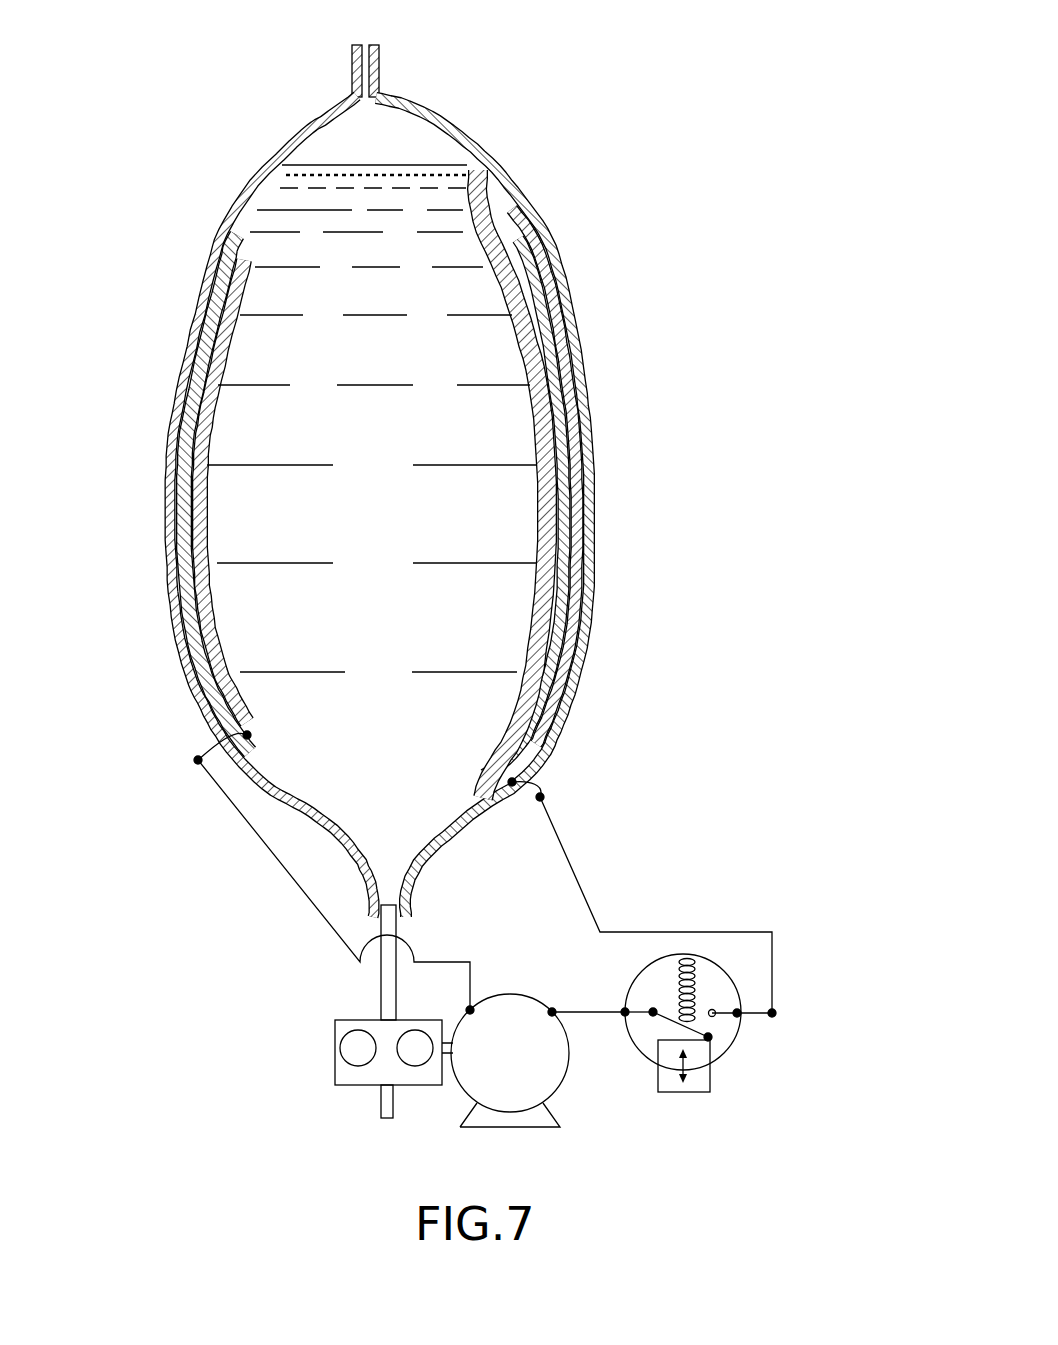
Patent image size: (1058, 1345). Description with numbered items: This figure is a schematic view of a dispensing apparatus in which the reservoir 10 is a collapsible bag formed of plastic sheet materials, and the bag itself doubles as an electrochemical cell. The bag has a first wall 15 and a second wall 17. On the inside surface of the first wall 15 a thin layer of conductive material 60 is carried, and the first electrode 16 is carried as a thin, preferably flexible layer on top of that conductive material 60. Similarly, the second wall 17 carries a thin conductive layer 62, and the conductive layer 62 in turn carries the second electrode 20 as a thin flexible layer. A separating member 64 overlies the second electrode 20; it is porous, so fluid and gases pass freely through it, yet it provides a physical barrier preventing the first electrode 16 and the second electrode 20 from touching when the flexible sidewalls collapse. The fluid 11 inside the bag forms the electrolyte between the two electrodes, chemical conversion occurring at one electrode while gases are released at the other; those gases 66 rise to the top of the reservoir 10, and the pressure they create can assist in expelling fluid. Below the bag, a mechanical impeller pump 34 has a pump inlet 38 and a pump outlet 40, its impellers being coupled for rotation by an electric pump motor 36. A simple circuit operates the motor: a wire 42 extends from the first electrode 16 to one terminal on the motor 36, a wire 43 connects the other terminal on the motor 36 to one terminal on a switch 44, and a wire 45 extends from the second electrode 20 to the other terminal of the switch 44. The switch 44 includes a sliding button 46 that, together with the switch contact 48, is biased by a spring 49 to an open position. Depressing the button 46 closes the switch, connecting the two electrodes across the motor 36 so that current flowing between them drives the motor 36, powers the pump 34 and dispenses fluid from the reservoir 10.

The reservoir 10 is at (216, 179).
The fluid 11 is at (304, 426).
The first wall 15 is at (300, 128).
The first electrode 16 is at (222, 337).
The second wall 17 is at (462, 137).
The second electrode 20 is at (535, 305).
The impeller pump 34 is at (335, 1043).
The pump motor 36 is at (492, 1107).
The pump inlet 38 is at (373, 1017).
The pump outlet 40 is at (380, 1110).
The wire 42 is at (278, 863).
The wire 43 is at (597, 1012).
The switch 44 is at (778, 1038).
The wire 45 is at (772, 968).
The sliding button 46 is at (678, 1095).
The switch contact 48 is at (660, 1022).
The spring 49 is at (688, 968).
The conductive material 60 is at (250, 248).
The conductive layer 62 is at (520, 230).
The separating member 64 is at (547, 455).
The gases 66 is at (373, 147).